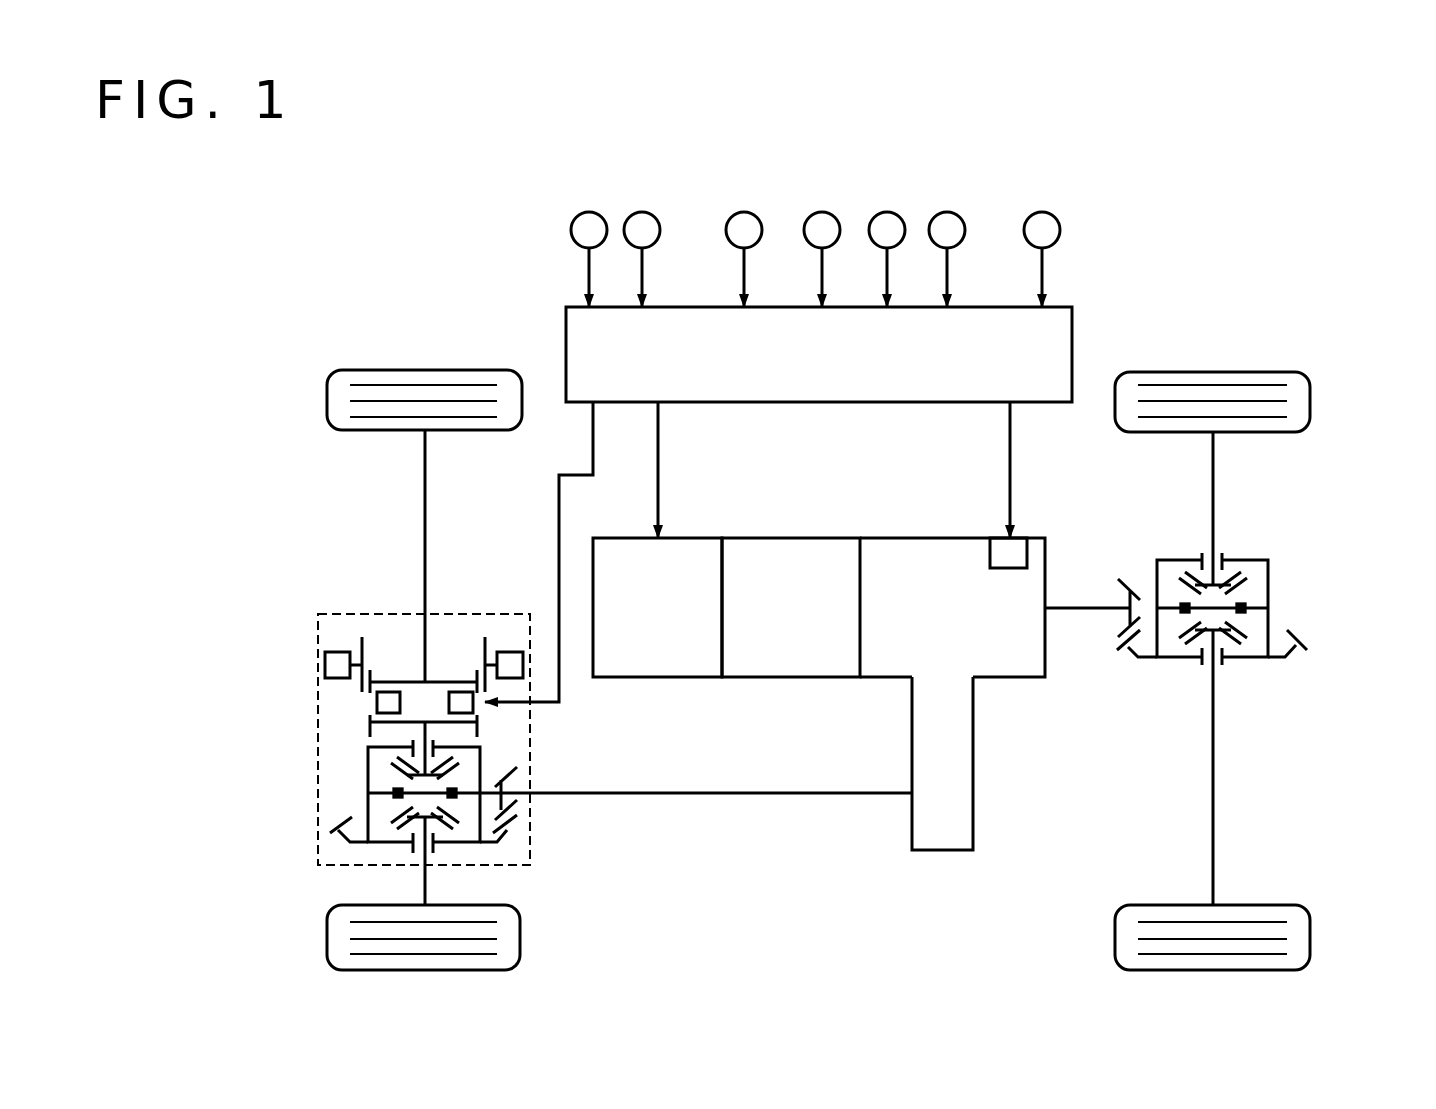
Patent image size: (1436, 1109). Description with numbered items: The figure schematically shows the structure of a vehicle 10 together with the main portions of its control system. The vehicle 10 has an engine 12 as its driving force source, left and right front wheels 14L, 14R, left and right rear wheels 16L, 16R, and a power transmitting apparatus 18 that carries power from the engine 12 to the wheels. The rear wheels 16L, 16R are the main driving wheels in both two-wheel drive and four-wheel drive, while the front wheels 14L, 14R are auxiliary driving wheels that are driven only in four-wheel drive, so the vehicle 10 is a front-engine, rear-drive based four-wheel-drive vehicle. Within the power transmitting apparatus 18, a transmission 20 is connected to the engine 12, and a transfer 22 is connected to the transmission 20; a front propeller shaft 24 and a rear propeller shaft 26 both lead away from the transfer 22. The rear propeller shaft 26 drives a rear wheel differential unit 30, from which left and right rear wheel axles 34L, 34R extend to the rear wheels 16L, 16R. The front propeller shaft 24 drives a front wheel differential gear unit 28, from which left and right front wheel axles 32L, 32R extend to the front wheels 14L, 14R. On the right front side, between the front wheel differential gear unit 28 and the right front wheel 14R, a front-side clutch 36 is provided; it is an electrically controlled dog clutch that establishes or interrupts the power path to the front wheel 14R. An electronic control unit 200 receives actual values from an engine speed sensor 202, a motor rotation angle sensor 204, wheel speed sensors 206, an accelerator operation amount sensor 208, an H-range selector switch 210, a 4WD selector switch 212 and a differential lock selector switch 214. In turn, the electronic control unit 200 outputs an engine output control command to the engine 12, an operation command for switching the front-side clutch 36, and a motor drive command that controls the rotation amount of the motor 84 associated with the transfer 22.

The vehicle 10 is at (1145, 142).
The engine 12 is at (626, 550).
The right front wheel 14R is at (385, 380).
The left front wheel 14L is at (510, 940).
The right rear wheel 16R is at (1191, 380).
The left rear wheel 16L is at (1305, 940).
The power transmitting apparatus 18 is at (918, 893).
The transmission 20 is at (768, 550).
The transfer 22 is at (934, 550).
The front propeller shaft 24 is at (690, 796).
The rear propeller shaft 26 is at (1080, 605).
The front wheel differential gear unit 28 is at (313, 870).
The rear wheel differential unit 30 is at (1254, 668).
The right front wheel axle 32R is at (425, 508).
The left front wheel axle 32L is at (425, 888).
The right rear wheel axle 34R is at (1213, 490).
The left rear wheel axle 34L is at (1213, 840).
The front-side clutch 36 is at (355, 702).
The motor 84 is at (1020, 555).
The electronic control unit (ECU) 200 is at (792, 402).
The engine speed sensor 202 is at (590, 228).
The motor rotation angle sensor 204 is at (638, 236).
The wheel speed sensors 206 is at (745, 228).
The accelerator operation amount sensor 208 is at (822, 228).
The H-range selector switch 210 is at (887, 228).
The 4WD selector switch 212 is at (947, 228).
The differential lock selector switch 214 is at (1042, 228).